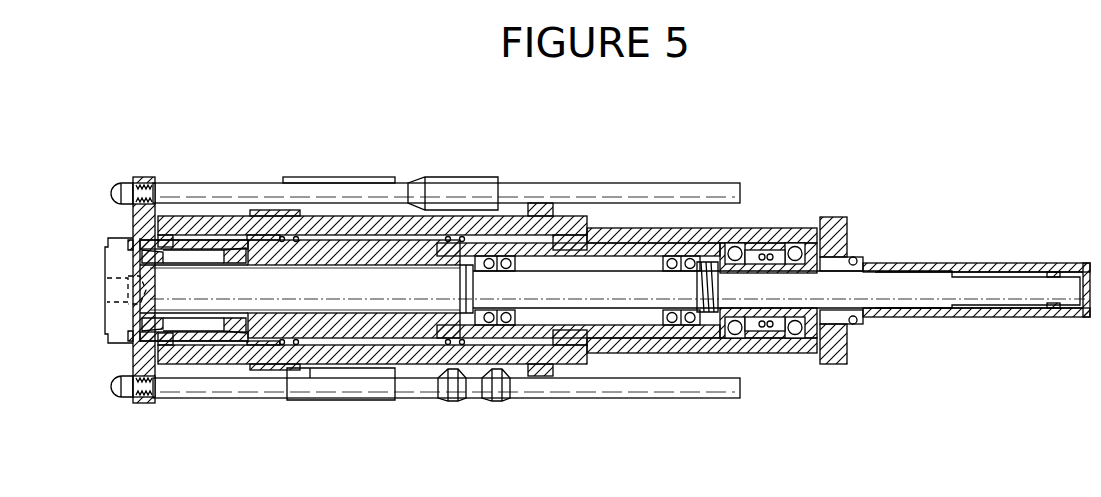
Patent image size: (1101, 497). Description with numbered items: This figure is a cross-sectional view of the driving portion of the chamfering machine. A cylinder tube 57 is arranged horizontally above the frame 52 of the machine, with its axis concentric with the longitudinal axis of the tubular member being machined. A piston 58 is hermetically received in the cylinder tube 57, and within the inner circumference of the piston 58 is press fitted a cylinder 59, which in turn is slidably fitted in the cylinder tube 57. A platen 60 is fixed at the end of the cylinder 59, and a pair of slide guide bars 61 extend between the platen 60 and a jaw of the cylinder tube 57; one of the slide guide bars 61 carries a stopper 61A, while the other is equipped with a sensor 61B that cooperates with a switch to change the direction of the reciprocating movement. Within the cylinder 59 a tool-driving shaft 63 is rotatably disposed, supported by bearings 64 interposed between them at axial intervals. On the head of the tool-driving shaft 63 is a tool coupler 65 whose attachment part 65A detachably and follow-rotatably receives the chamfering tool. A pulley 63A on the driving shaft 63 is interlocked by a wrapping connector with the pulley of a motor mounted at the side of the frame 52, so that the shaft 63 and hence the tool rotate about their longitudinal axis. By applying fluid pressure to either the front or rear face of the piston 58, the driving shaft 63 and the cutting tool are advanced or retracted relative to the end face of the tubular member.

The frame 52 is at (363, 368).
The cylinder tube 57 is at (272, 228).
The piston 58 is at (450, 245).
The cylinder 59 is at (348, 248).
The platen 60 is at (136, 360).
The slide guide bars 61 is at (348, 190).
The stopper 61A is at (467, 190).
The sensor 61B is at (453, 383).
The tool-driving shaft 63 is at (617, 282).
The pulley 63A is at (842, 366).
The bearings 64 is at (222, 266).
The tool coupler 65 is at (117, 265).
The attachment part 65A is at (110, 297).